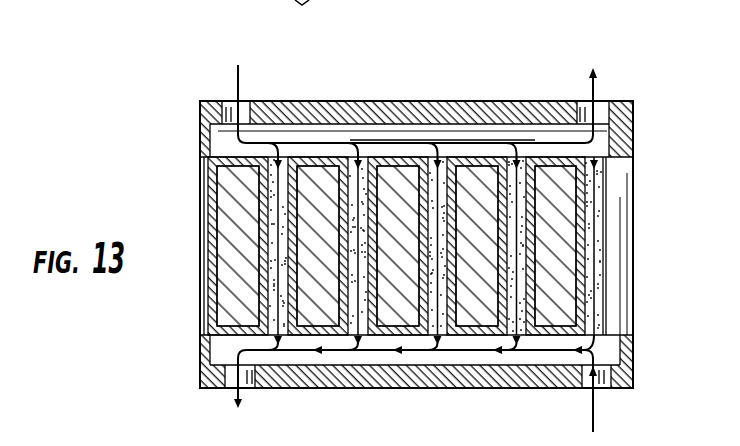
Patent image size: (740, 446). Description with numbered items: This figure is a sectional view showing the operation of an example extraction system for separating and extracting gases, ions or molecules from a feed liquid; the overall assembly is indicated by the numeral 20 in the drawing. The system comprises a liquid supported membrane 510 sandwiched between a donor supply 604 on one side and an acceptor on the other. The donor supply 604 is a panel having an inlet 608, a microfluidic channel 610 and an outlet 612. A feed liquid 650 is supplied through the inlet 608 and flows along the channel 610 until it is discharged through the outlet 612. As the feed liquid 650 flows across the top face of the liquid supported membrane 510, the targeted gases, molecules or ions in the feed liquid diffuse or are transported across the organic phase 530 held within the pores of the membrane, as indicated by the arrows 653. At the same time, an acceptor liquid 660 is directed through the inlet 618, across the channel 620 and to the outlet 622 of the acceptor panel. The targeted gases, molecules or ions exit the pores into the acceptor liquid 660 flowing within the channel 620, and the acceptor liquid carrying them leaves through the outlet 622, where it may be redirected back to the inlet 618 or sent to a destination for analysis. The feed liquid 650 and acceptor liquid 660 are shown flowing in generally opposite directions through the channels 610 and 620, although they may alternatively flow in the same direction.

The heat exchanger assembly 20 is at (632, 258).
The liquid supported membrane 510 is at (622, 228).
The organic phase 530 is at (278, 213).
The donor supply 604 is at (642, 101).
The inlet 608 is at (231, 101).
The microfluidic channel 610 is at (472, 138).
The outlet 612 is at (586, 101).
The inlet 618 is at (585, 386).
The microfluidic channel 620 is at (444, 358).
The outlet 622 is at (230, 381).
The feed liquid 650 is at (238, 82).
The arrows 653 is at (278, 237).
The acceptor liquid 660 is at (594, 400).